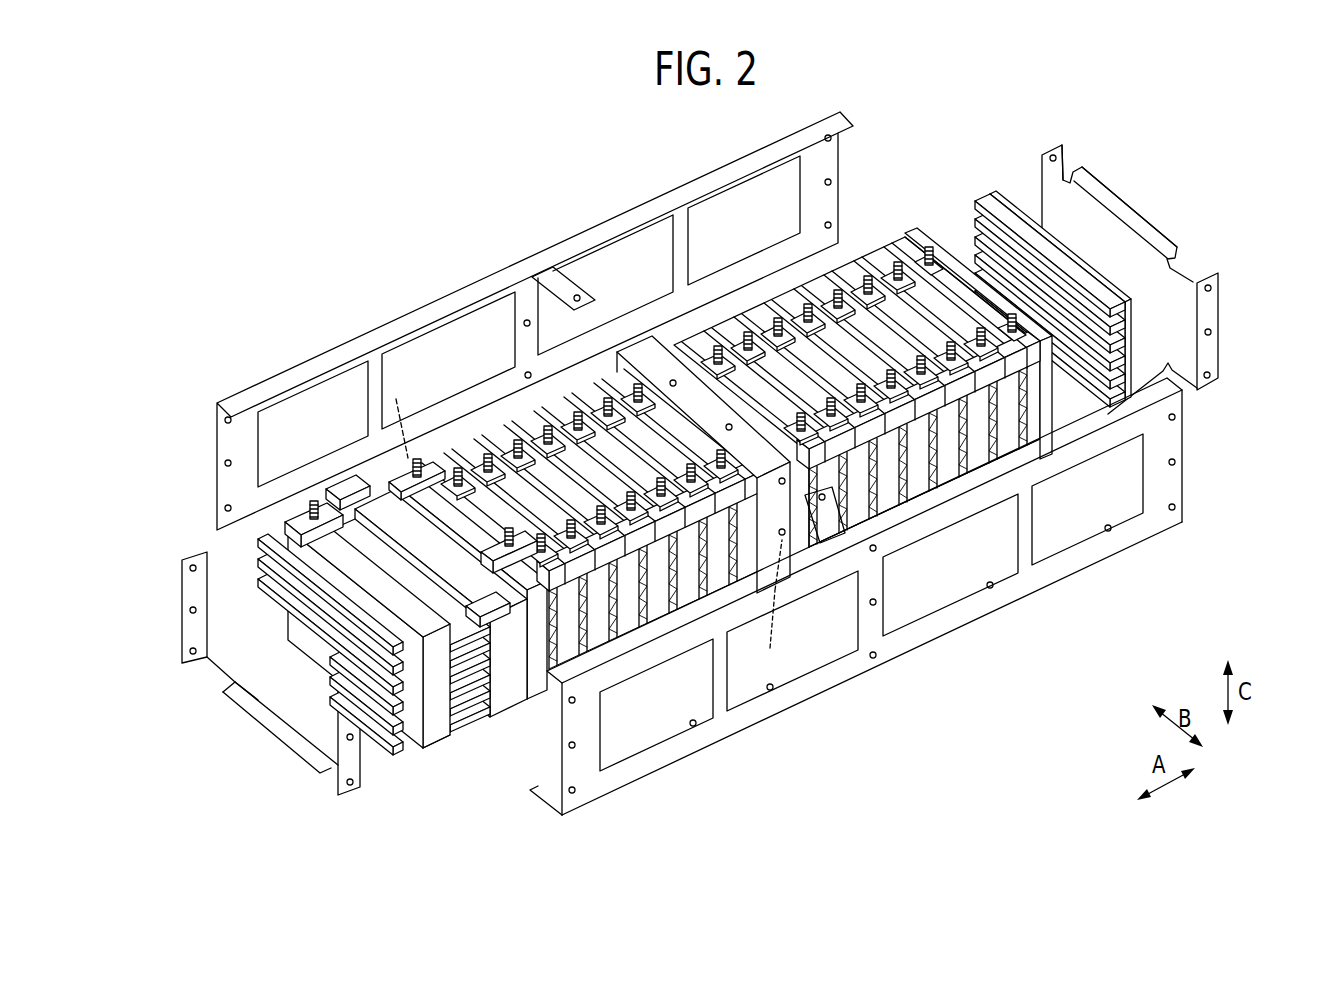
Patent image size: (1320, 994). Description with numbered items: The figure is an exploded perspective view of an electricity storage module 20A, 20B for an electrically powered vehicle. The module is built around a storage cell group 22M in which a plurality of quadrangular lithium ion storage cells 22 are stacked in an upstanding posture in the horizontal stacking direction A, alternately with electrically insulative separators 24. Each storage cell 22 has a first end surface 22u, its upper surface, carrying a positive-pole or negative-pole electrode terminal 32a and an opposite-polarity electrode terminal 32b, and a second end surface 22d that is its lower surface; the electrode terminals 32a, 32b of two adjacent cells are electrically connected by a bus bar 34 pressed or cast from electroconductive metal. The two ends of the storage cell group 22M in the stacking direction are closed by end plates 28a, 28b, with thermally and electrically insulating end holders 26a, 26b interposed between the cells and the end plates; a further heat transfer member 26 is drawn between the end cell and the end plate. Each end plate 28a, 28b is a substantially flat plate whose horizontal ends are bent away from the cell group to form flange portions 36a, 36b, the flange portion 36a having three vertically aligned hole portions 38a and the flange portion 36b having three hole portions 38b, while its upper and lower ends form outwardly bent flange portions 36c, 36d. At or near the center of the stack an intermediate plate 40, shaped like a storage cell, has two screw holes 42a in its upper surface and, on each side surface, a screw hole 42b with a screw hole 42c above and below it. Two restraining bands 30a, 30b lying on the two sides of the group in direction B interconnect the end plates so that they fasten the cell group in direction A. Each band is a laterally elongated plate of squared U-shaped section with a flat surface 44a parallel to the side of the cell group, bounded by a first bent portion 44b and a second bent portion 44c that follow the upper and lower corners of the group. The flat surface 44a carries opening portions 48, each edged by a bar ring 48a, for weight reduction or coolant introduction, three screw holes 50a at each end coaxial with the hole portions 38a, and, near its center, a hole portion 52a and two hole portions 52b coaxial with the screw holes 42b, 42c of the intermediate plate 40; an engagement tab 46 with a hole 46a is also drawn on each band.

The electricity storage module 20A is at (575, 107).
The electricity storage module 20B is at (616, 107).
The storage cell 22 is at (886, 303).
The storage cell group 22M is at (960, 160).
The first end surface 22u is at (370, 583).
The second end surface 22d is at (434, 746).
The separator 24 is at (478, 716).
The heat transfer plate 26 is at (421, 611).
The end holder 26a is at (396, 747).
The end holder 26b is at (1003, 207).
The end plate 28a is at (265, 740).
The end plate 28b is at (1114, 186).
The restraining band 30a is at (1052, 594).
The restraining band 30b is at (695, 177).
The electrode terminal 32a is at (505, 530).
The electrode terminal 32b is at (542, 533).
The bus bar 34 is at (528, 740).
The flange portion 36a is at (1200, 307).
The flange portion 36b is at (1063, 160).
The flange portion 36c is at (1160, 237).
The flange portion 36d is at (240, 708).
The hole portion 38a is at (1211, 331).
The hole portion 38b is at (1054, 155).
The intermediate plate 40 is at (633, 342).
The screw hole 42a is at (731, 424).
The screw hole 42b is at (785, 536).
The screw hole 42c is at (770, 607).
The flat surface 44a is at (722, 722).
The first bent portion 44b is at (1098, 420).
The second bent portion 44c is at (540, 795).
The engagement tab 46 is at (567, 288).
The tab hole 46a is at (579, 295).
The opening portion 48 is at (676, 712).
The bar ring 48a is at (696, 726).
The screw hole 50a is at (825, 224).
The hole portion 52a is at (526, 320).
The hole portion 52b is at (526, 372).